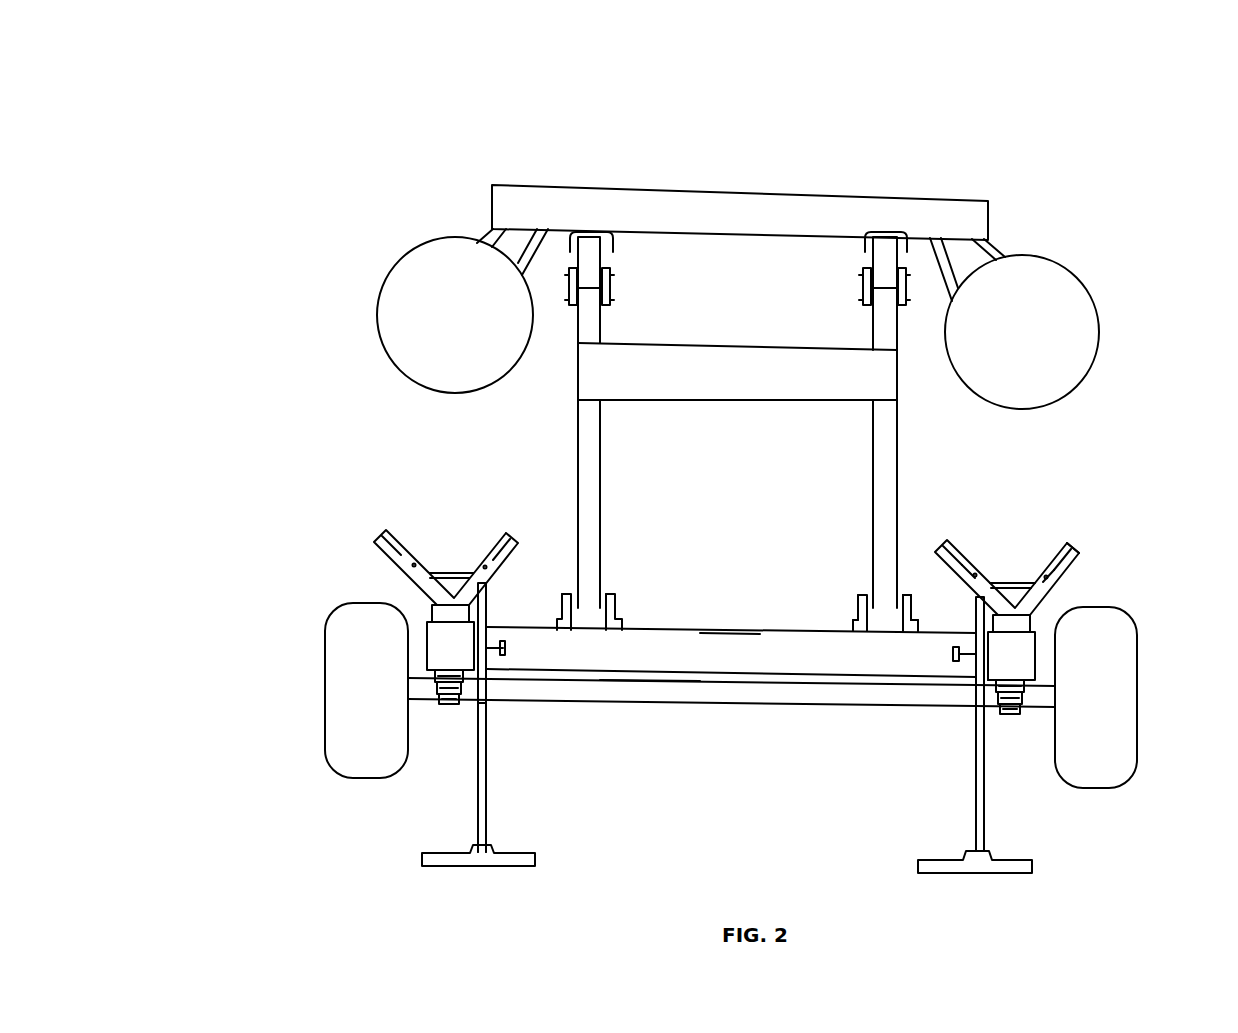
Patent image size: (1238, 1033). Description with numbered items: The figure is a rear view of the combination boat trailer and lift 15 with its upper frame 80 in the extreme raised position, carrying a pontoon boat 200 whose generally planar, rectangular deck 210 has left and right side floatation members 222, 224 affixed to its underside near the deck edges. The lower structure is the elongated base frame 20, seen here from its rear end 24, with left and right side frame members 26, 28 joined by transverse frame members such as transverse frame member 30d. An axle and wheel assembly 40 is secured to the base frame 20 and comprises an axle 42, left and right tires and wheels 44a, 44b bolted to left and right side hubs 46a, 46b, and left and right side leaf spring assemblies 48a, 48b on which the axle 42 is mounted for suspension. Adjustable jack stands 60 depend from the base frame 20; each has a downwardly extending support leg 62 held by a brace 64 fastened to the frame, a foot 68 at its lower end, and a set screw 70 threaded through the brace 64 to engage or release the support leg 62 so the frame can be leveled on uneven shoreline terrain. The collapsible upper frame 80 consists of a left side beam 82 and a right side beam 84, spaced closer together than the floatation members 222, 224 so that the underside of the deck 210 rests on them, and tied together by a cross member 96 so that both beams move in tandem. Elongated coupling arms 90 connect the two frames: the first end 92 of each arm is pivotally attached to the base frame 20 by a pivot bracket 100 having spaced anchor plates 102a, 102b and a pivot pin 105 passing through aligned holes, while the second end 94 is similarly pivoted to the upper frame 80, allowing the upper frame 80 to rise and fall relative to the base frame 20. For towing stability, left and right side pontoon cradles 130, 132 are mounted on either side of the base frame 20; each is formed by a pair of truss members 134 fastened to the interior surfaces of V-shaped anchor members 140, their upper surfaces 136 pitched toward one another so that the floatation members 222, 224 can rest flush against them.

The combination boat trailer and lift 15 is at (269, 108).
The base frame 20 is at (593, 660).
The rear end 24 is at (1003, 667).
The left side frame member 26 is at (435, 633).
The right side frame member 28 is at (1023, 643).
The transverse frame member 30d is at (783, 660).
The axle and wheel assembly 40 is at (650, 697).
The axle 42 is at (722, 697).
The left tire and wheel 44a is at (333, 716).
The right tire and wheel 44b is at (1125, 697).
The left side hub 46a is at (410, 705).
The right side hub 46b is at (1041, 724).
The left side leaf spring assembly 48a is at (448, 705).
The right side leaf spring assembly 48b is at (1003, 715).
The jack stand 60 is at (483, 797).
The support leg 62 is at (475, 812).
The brace 64 is at (483, 635).
The foot 68 is at (513, 858).
The set screw 70 is at (503, 649).
The upper frame 80 is at (846, 267).
The left side beam 82 is at (590, 258).
The right side beam 84 is at (888, 270).
The coupling arm 90 is at (578, 453).
The first end 92 is at (590, 603).
The second end 94 is at (595, 297).
The cross member 96 is at (637, 393).
The pivot bracket 100 is at (617, 280).
The anchor plate 102a is at (850, 628).
The anchor plate 102b is at (913, 625).
The pivot pin 105 is at (895, 598).
The left side pontoon cradle 130 is at (382, 509).
The right side pontoon cradle 132 is at (1066, 525).
The truss member 134 is at (1042, 563).
The upper surface 136 is at (1058, 550).
The V-shaped anchor member 140 is at (1067, 568).
The pontoon boat 200 is at (1011, 201).
The deck 210 is at (562, 196).
The left side floatation member 222 is at (400, 300).
The right side floatation member 224 is at (1075, 312).